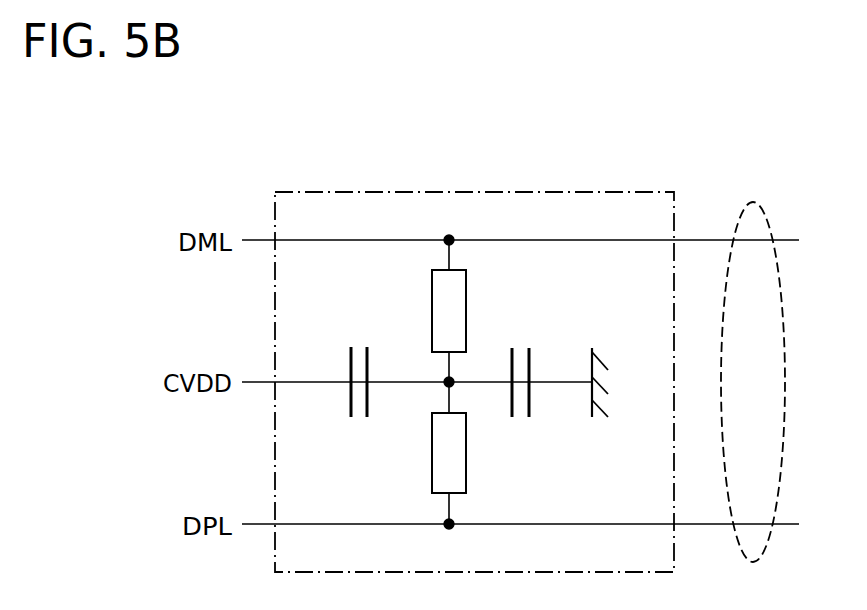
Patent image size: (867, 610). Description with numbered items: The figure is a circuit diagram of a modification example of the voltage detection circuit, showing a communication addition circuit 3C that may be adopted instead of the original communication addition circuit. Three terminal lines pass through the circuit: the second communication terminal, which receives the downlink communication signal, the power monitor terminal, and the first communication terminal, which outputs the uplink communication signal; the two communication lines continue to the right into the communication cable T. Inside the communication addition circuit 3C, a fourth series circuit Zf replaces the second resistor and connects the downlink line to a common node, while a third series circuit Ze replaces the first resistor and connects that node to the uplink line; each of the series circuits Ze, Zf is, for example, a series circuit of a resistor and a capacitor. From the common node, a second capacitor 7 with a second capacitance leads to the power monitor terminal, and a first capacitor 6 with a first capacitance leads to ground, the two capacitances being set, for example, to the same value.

The communication addition circuit 3C is at (468, 192).
The communication cable T is at (748, 200).
The fourth series circuit Zf is at (466, 313).
The third series circuit Ze is at (466, 452).
The first capacitor 6 is at (531, 365).
The second capacitor 7 is at (369, 365).